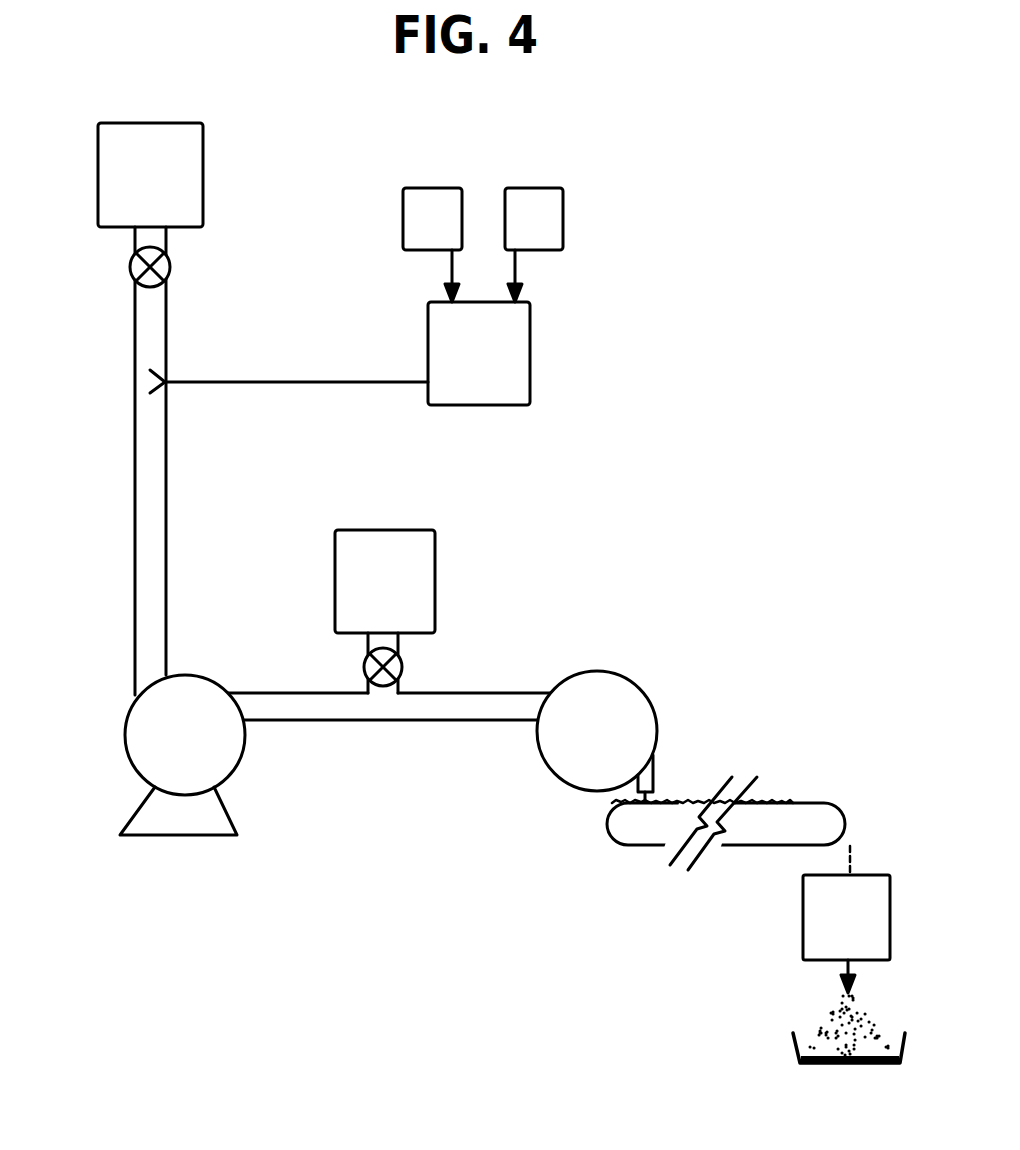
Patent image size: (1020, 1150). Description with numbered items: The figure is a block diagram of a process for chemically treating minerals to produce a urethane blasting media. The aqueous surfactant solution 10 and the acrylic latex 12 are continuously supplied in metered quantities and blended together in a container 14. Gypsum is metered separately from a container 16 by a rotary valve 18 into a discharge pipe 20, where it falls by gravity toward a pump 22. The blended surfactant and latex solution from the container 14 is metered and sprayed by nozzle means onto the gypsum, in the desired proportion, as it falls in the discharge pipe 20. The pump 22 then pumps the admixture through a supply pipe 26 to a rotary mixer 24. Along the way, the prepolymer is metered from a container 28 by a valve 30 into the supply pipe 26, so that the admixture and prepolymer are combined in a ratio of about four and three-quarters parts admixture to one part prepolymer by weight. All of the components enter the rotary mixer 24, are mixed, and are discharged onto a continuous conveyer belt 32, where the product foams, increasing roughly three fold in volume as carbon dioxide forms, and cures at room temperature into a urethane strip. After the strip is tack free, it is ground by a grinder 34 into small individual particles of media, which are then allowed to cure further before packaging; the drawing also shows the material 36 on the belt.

The aqueous surfactant solution 10 is at (449, 237).
The acrylic latex 12 is at (551, 237).
The container 14 is at (496, 370).
The container 16 is at (164, 191).
The rotary valve 18 is at (172, 270).
The discharge pipe 20 is at (133, 457).
The pump 22 is at (133, 743).
The rotary mixer 24 is at (603, 670).
The supply pipe 26 is at (310, 722).
The container 28 is at (406, 600).
The valve 30 is at (405, 665).
The continuous conveyer belt 32 is at (610, 800).
The grinder 34 is at (803, 910).
The powder layer 36 is at (792, 802).